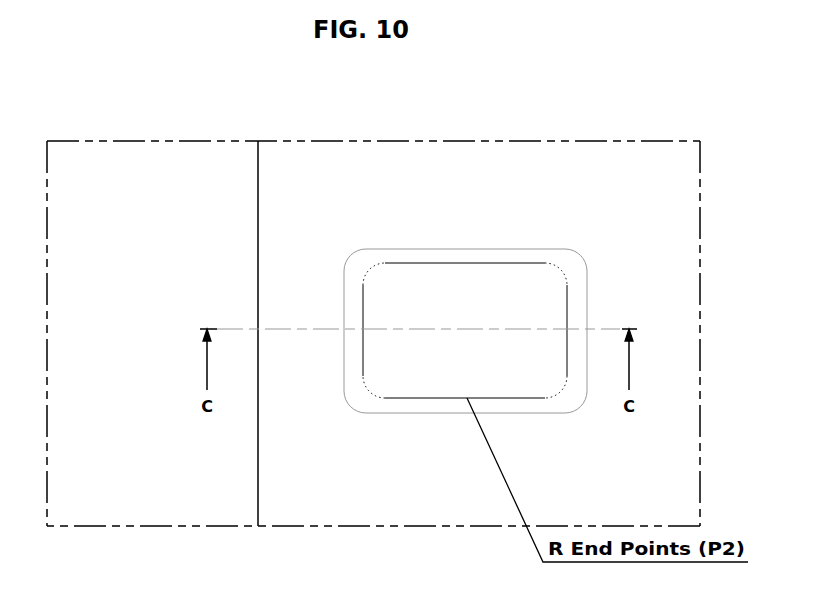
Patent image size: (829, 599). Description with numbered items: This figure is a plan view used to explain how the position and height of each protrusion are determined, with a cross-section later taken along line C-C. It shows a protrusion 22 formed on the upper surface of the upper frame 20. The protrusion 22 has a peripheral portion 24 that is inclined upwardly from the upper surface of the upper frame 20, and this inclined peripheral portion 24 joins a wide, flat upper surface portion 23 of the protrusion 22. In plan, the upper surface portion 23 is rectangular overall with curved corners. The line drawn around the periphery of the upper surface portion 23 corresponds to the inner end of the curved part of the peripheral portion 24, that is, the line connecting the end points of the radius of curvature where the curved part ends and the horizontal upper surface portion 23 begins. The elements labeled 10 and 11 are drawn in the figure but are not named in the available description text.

The display substrate 10 is at (164, 190).
The boundary line 11 is at (259, 176).
The upper frame 20 is at (596, 218).
The protrusion 22 is at (487, 248).
The upper surface portion 23 is at (548, 303).
The peripheral portion 24 is at (410, 259).